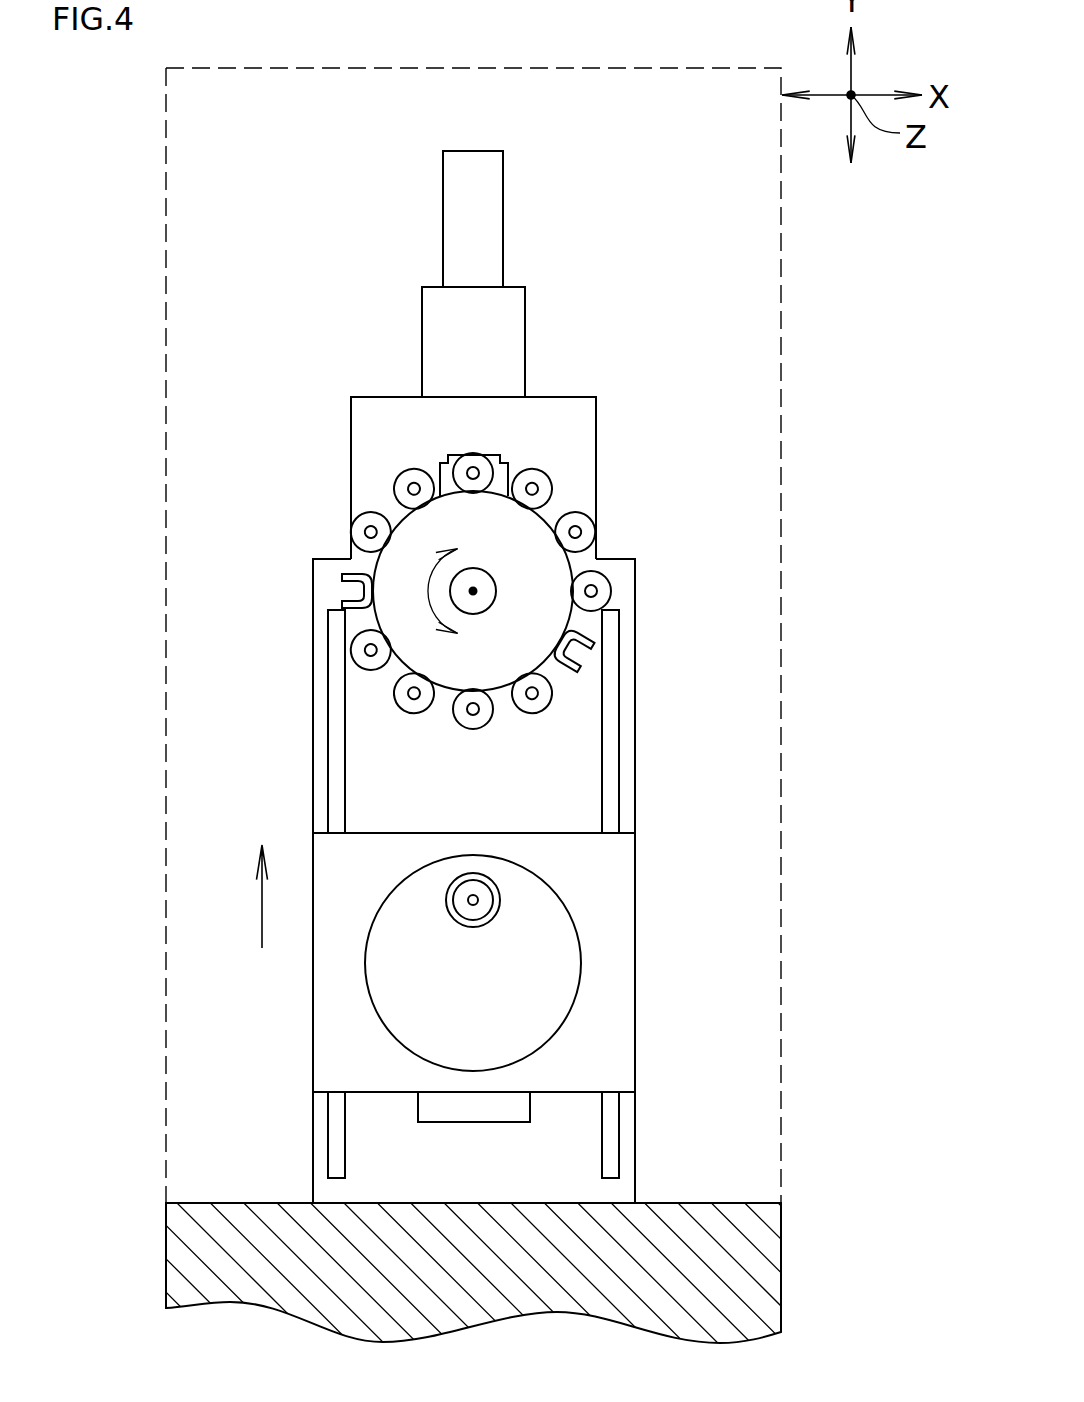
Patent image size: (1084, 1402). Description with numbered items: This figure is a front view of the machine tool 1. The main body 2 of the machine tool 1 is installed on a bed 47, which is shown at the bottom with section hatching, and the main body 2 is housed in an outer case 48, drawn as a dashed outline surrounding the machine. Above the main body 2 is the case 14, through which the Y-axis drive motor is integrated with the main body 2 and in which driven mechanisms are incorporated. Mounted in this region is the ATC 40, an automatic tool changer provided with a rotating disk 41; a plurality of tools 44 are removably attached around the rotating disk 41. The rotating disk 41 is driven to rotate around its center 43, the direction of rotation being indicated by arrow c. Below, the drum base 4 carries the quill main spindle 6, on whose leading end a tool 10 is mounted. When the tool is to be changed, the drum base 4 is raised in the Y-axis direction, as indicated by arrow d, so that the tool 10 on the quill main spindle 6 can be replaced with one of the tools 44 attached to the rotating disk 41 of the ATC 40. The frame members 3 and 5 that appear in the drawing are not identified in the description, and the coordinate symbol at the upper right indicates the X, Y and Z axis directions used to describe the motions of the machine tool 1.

The machine tool 1 is at (136, 332).
The main body 2 is at (323, 720).
The right column 3 is at (622, 725).
The drum base 4 is at (518, 1018).
The rotary table 5 is at (552, 1038).
The quill main spindle 6 is at (500, 892).
The tool 10 is at (488, 917).
The case 14 is at (597, 417).
The ATC (Automatic Tool Changer) 40 is at (491, 548).
The rotating disk 41 is at (543, 635).
The center of the rotating disk 43 is at (473, 591).
The tools 44 is at (595, 520).
The bed 47 is at (703, 1203).
The outer case 48 is at (166, 508).
The arrow c is at (428, 595).
The arrow d is at (262, 910).